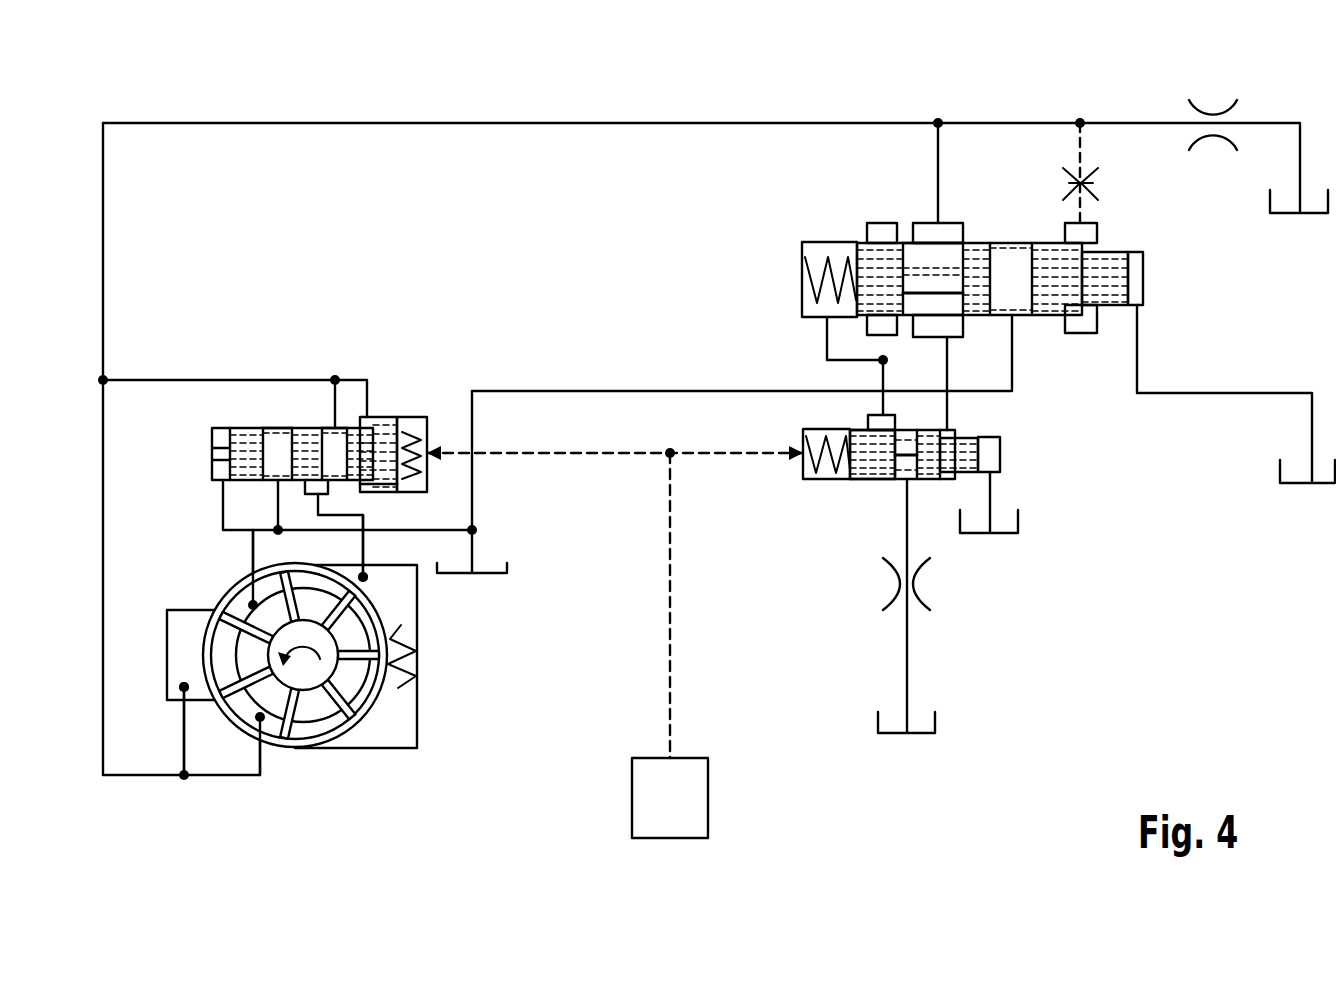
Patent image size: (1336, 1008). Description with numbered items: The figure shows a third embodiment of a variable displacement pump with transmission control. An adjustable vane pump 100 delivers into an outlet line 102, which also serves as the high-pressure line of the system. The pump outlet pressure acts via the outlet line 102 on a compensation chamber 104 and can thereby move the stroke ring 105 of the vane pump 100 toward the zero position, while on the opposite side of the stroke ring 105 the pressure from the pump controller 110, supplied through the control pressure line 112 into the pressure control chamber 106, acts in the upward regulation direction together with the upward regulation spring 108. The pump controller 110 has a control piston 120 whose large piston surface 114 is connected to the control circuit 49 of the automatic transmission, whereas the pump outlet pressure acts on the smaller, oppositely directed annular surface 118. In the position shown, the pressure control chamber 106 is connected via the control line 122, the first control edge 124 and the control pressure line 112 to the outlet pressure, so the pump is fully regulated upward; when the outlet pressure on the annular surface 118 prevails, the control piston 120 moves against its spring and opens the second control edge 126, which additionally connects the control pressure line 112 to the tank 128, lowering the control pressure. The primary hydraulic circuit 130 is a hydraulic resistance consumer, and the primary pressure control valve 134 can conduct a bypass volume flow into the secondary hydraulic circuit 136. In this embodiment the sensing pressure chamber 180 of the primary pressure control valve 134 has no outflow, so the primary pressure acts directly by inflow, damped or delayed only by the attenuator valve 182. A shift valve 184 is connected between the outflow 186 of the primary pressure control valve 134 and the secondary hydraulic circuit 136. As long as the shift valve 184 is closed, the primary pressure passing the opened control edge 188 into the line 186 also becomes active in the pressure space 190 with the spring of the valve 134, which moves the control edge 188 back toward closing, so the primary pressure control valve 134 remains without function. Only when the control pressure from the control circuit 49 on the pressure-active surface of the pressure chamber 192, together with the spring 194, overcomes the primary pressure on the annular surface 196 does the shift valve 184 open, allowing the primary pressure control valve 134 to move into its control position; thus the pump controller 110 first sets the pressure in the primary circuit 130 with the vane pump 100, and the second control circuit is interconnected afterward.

The control circuit 49 is at (683, 798).
The adjustable vane pump 100 is at (262, 682).
The outlet line 102 is at (873, 122).
The compensation chamber 104 is at (187, 668).
The stroke ring 105 is at (215, 632).
The pressure control chamber 106 is at (397, 732).
The upward regulation spring 108 is at (417, 688).
The pump controller 110 is at (316, 400).
The control pressure line 112 is at (365, 551).
The large piston surface 114 is at (403, 425).
The annular surface 118 is at (367, 484).
The control piston 120 is at (384, 426).
The control line 122 is at (212, 380).
The first control edge 124 is at (331, 427).
The second control edge 126 is at (283, 427).
The tank 128 is at (483, 578).
The primary hydraulic circuit 130 is at (1213, 108).
The primary pressure control valve 134 is at (1067, 325).
The secondary hydraulic circuit 136 is at (900, 583).
The sensing pressure chamber 180 is at (1088, 322).
The attenuator valve 182 is at (1065, 190).
The shift valve 184 is at (948, 468).
The outflow 186 is at (878, 363).
The control edge 188 is at (906, 260).
The pressure space 190 is at (818, 250).
The pressure chamber 192 is at (822, 480).
The spring 194 is at (822, 430).
The annular surface 196 is at (950, 467).